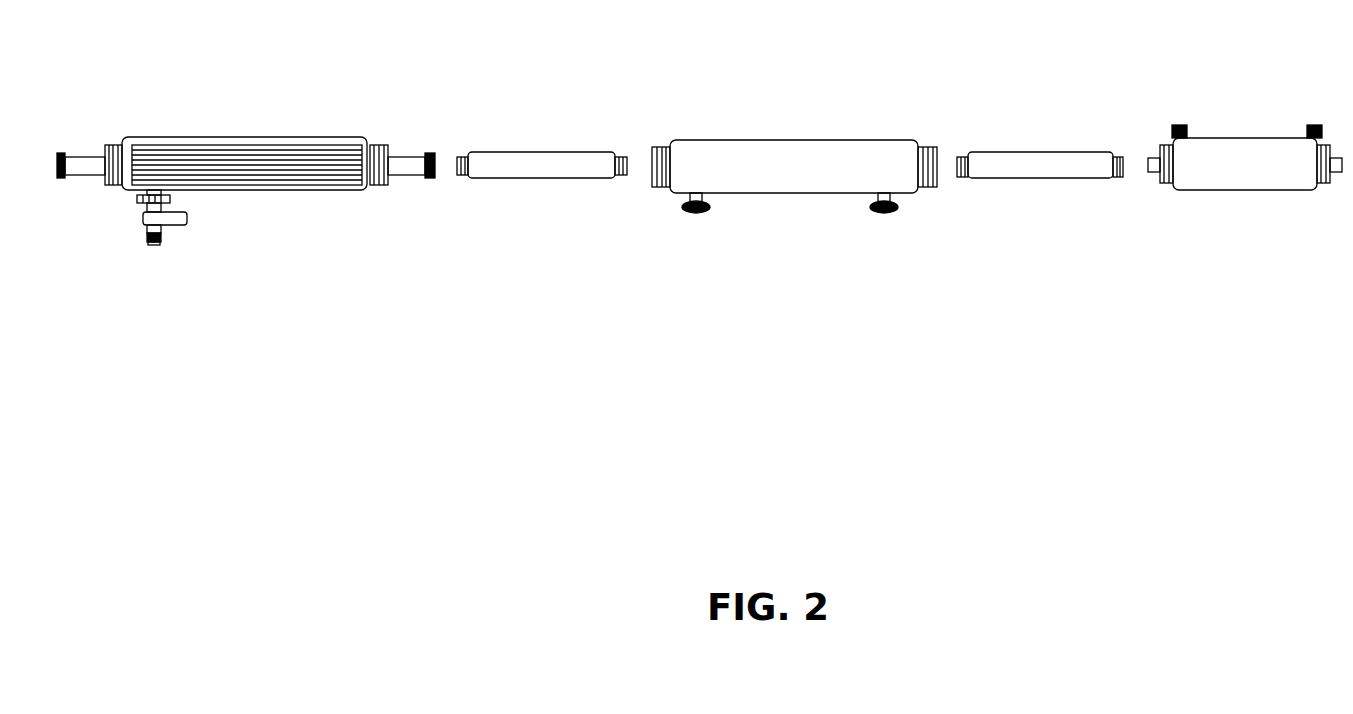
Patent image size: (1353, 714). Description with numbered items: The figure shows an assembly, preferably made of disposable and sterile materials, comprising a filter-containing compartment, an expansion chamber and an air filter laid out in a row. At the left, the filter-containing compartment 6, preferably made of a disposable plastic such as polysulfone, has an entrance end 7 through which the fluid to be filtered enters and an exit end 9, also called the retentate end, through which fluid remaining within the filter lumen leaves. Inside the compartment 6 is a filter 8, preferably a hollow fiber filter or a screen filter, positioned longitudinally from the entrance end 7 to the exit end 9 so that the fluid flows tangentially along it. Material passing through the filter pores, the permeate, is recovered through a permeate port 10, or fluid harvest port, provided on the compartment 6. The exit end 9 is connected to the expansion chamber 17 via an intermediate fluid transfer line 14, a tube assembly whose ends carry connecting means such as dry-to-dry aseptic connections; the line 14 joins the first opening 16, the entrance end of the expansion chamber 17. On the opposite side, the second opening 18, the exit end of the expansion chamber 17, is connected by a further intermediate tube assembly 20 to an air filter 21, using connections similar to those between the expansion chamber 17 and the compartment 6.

The filter-containing compartment 6 is at (244, 164).
The entrance end 7 is at (102, 137).
The filter 8 is at (297, 163).
The exit end 9 is at (395, 137).
The permeate port 10 is at (185, 237).
The fluid transfer line 14 is at (537, 135).
The first opening 16 is at (650, 133).
The expansion chamber 17 is at (785, 133).
The second opening 18 is at (942, 132).
The intermediate tube assembly 20 is at (1058, 132).
The air filter 21 is at (1241, 132).